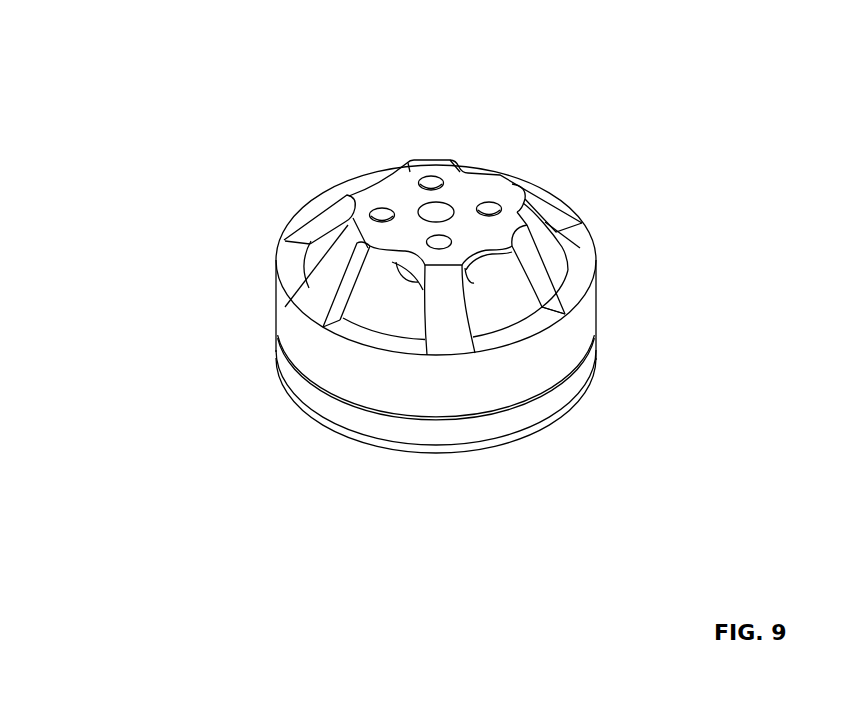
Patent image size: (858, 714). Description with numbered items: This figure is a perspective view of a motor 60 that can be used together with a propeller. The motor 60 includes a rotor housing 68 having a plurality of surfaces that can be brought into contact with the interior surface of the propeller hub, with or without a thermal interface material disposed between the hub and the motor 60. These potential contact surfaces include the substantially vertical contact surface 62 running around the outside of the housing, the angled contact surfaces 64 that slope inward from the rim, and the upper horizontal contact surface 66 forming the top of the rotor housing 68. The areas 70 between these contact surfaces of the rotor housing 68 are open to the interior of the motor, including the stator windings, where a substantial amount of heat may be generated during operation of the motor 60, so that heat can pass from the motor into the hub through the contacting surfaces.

The motor 60 is at (212, 142).
The vertical contact surface 62 is at (278, 315).
The angled contact surfaces 64 is at (552, 270).
The upper horizontal contact surface 66 is at (470, 186).
The rotor housing 68 is at (554, 205).
The areas between contact surfaces 70 is at (378, 306).